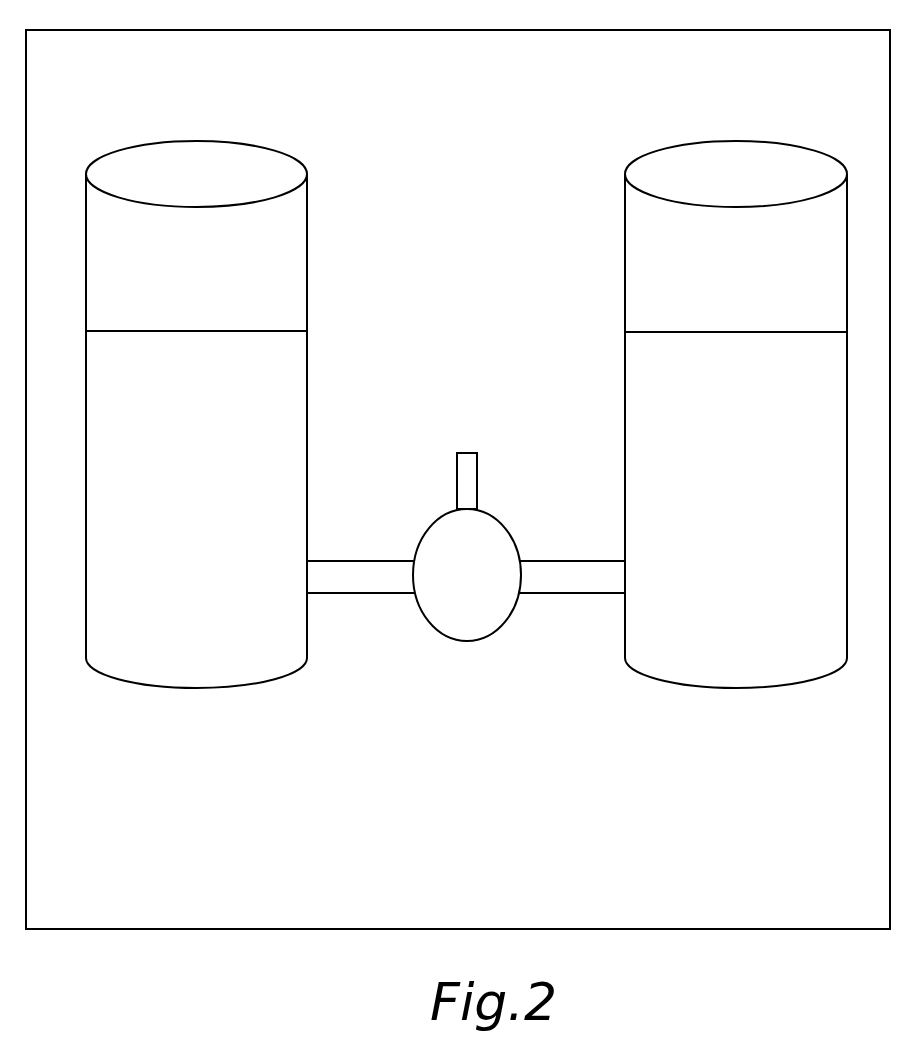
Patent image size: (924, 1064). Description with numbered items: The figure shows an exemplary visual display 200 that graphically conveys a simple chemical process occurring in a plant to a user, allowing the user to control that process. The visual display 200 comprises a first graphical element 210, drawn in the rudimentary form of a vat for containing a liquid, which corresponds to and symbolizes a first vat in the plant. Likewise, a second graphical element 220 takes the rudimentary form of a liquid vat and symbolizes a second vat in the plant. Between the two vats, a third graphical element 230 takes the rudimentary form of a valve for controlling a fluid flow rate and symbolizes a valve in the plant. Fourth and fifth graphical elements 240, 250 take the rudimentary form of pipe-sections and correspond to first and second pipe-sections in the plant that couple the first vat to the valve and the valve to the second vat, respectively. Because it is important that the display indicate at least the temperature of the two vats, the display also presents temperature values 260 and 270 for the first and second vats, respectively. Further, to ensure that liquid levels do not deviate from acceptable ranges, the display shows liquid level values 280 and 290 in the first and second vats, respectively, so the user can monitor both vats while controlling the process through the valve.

The visual display 200 is at (512, 112).
The first graphical element 210 is at (307, 238).
The second graphical element 220 is at (626, 233).
The third graphical element 230 is at (486, 622).
The fourth graphical element 240 is at (357, 560).
The fifth graphical element 250 is at (560, 560).
The temperature value of the first vat 260 is at (290, 444).
The temperature value of the second vat 270 is at (640, 454).
The liquid level value of the first vat 280 is at (307, 331).
The liquid level value of the second vat 290 is at (626, 330).